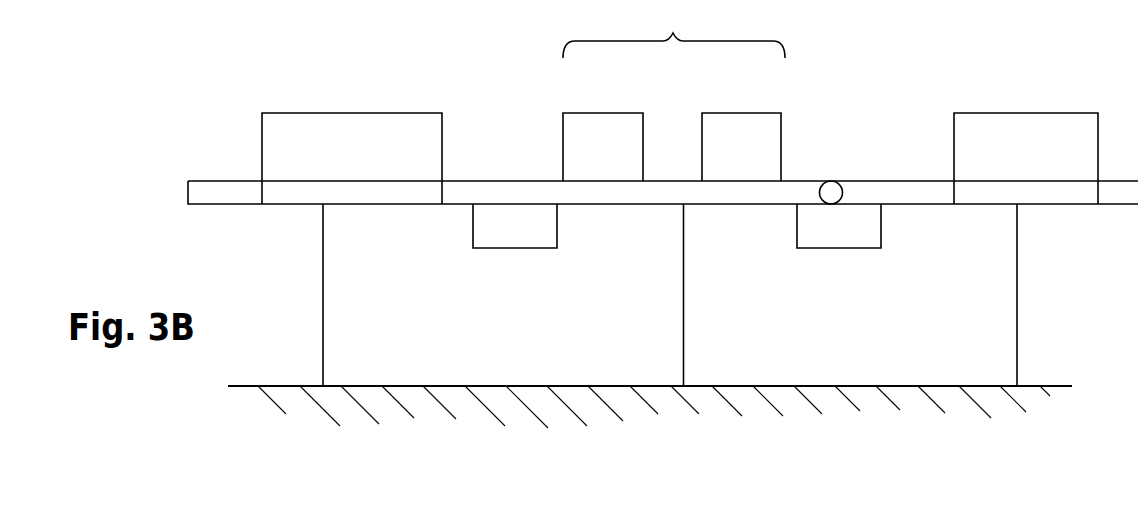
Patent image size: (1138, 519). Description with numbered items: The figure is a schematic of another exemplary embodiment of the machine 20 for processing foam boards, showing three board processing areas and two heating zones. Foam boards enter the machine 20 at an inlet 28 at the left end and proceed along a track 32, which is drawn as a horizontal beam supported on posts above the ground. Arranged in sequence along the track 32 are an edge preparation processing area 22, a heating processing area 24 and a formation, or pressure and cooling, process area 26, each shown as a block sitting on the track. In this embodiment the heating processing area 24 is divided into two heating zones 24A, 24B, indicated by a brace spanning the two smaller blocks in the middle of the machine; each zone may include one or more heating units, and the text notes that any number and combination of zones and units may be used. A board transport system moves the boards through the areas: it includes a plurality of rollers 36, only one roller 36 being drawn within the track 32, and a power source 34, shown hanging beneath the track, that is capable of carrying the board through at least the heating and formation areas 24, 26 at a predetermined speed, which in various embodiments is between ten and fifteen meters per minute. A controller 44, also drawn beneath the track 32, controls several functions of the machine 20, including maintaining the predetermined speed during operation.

The machine 20 is at (870, 63).
The edge preparation processing area 22 is at (350, 113).
The heating processing area 24 is at (674, 31).
The heating zone 24A is at (620, 113).
The heating zone 24B is at (755, 113).
The formation process area 26 is at (1025, 113).
The inlet 28 is at (188, 181).
The track 32 is at (510, 181).
The power source 34 is at (515, 249).
The roller 36 is at (842, 190).
The controller 44 is at (840, 249).